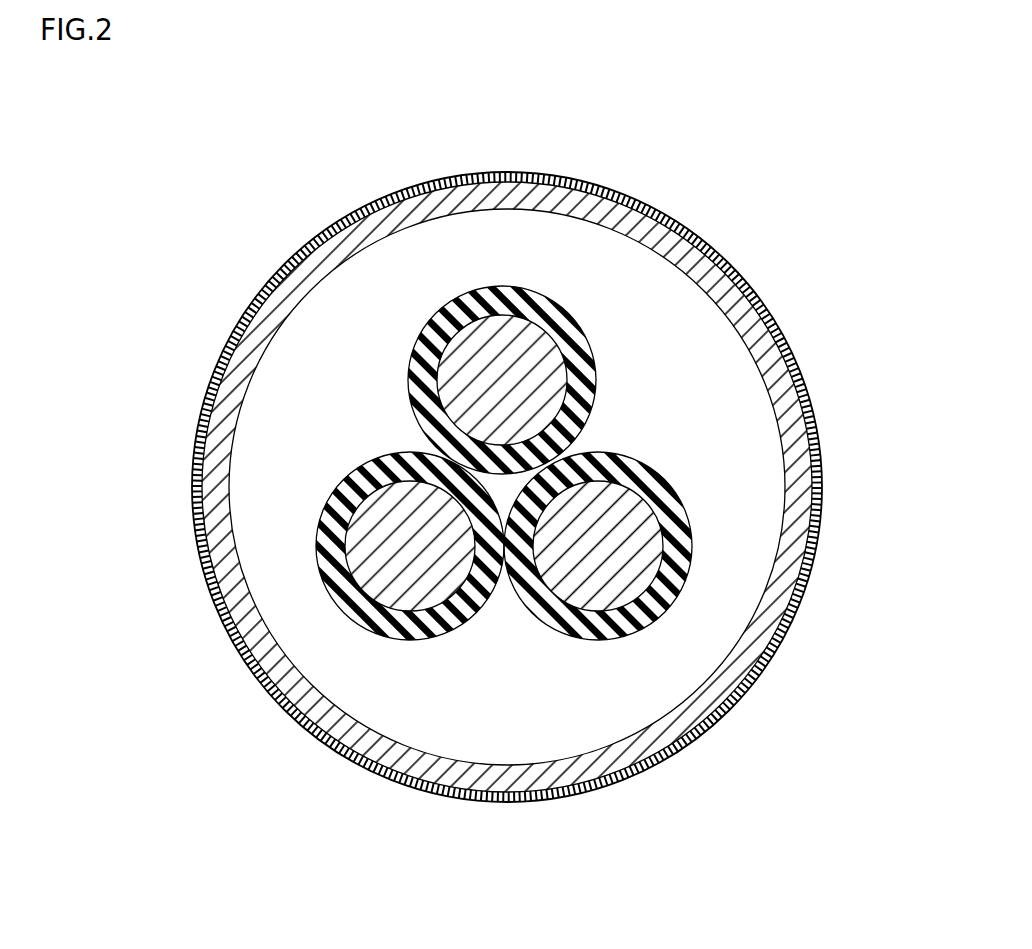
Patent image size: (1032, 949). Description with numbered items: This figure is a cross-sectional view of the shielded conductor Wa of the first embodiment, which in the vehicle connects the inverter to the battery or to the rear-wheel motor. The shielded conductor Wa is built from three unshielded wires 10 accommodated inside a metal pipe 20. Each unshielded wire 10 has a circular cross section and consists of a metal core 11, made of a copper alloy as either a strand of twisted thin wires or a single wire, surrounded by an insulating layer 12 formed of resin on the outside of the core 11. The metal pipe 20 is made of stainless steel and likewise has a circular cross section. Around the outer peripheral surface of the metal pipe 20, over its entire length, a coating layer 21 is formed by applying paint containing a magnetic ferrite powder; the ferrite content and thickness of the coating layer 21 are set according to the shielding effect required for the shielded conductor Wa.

The shielded conductor Wa is at (680, 217).
The unshielded wire 10 is at (373, 448).
The core 11 is at (487, 367).
The insulating layer 12 is at (416, 356).
The metal pipe 20 is at (748, 293).
The coating layer 21 is at (753, 685).